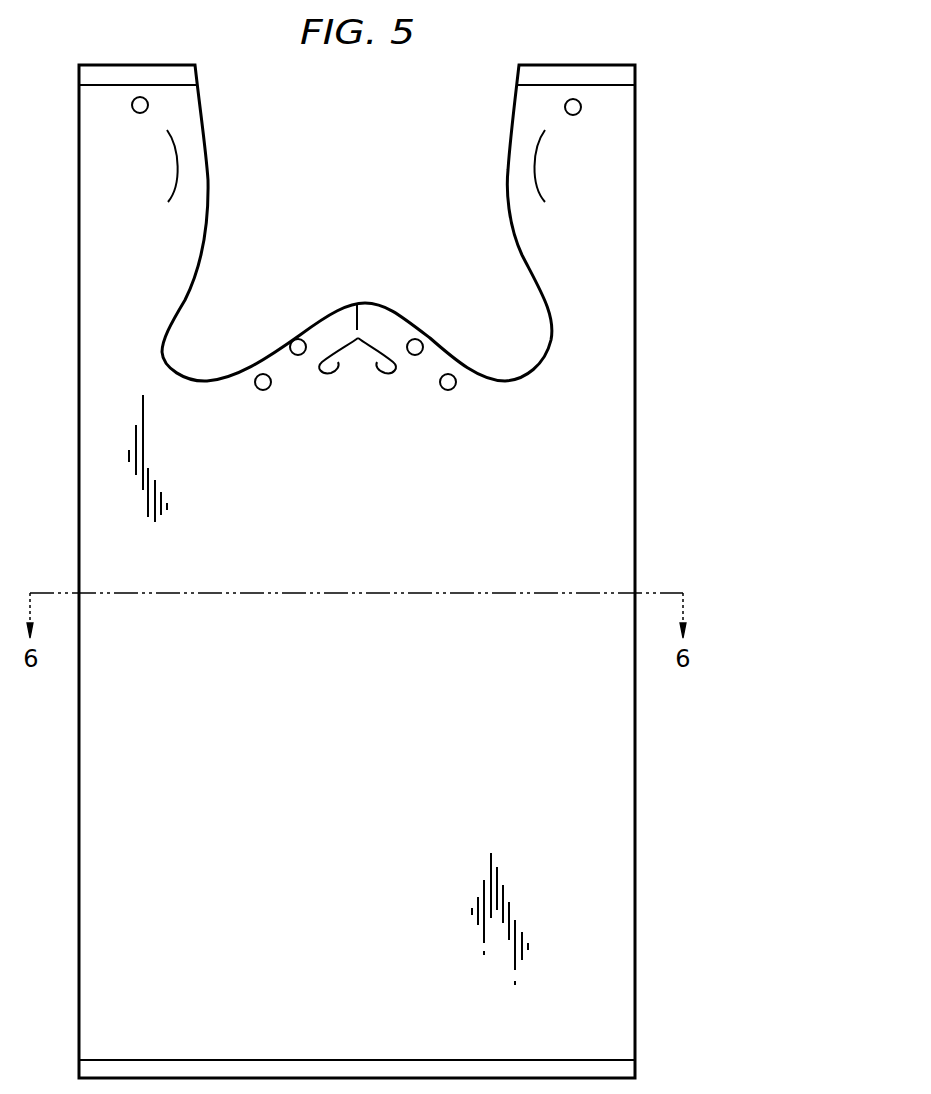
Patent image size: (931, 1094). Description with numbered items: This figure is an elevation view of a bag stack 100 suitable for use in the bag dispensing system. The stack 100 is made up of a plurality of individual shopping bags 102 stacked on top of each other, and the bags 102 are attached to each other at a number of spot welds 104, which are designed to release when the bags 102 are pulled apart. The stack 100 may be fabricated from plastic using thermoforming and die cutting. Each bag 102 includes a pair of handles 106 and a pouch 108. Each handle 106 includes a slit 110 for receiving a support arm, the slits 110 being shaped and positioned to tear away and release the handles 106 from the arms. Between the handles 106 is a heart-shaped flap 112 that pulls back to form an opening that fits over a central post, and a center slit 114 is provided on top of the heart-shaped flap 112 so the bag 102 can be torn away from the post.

The bag stack 100 is at (697, 73).
The shopping bag 102 is at (622, 520).
The spot weld 104 is at (148, 104).
The handle 106 is at (92, 226).
The pouch 108 is at (92, 858).
The slit 110 is at (180, 168).
The heart-shaped flap 112 is at (378, 337).
The center slit 114 is at (353, 306).